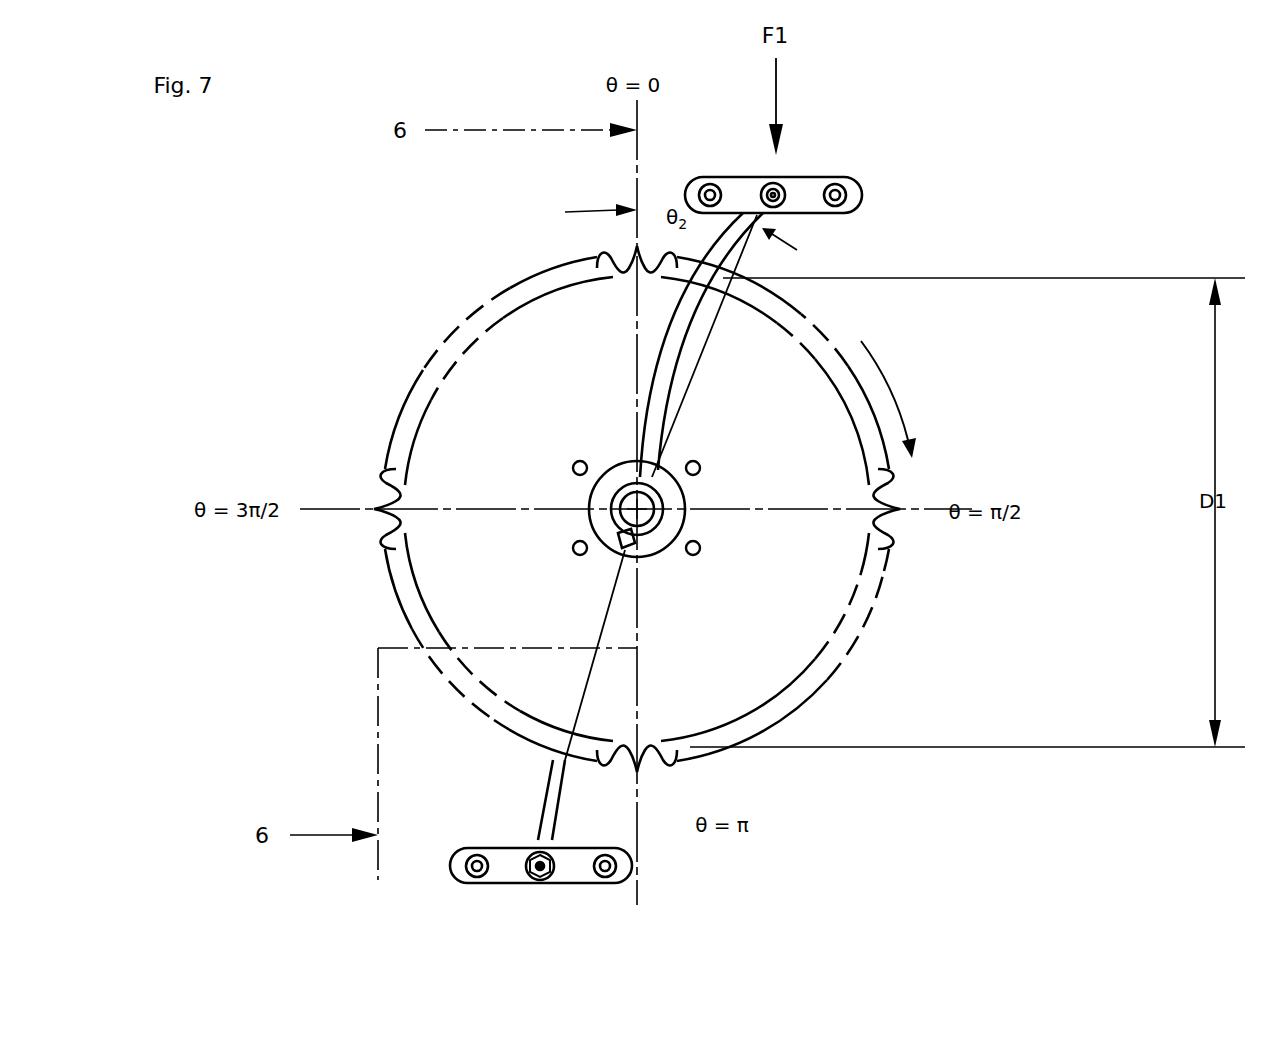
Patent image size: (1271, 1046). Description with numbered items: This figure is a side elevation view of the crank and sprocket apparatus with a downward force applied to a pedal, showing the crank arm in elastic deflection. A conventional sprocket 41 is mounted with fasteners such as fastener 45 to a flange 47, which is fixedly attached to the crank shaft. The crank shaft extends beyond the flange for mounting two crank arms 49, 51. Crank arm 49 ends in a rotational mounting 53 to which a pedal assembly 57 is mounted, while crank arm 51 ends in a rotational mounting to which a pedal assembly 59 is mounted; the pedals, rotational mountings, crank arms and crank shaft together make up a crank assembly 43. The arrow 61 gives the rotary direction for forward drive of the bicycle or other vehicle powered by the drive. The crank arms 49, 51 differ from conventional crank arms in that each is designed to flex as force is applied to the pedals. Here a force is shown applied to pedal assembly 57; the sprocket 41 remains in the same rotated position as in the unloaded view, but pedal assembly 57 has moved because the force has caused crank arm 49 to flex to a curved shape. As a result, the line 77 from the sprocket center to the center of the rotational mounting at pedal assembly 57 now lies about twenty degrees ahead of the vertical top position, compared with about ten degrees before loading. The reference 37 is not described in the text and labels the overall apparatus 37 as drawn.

The rotor assembly 37 is at (244, 349).
The sprocket 41 is at (460, 413).
The crank assembly 43 is at (675, 428).
The fastener 45 is at (573, 548).
The flange 47 is at (652, 552).
The crank arm 49 is at (678, 315).
The crank arm 51 is at (573, 780).
The rotational mounting 53 is at (762, 180).
The pedal assembly 57 is at (800, 188).
The pedal assembly 59 is at (508, 855).
The arrow 61 is at (883, 375).
The line 77 is at (781, 178).